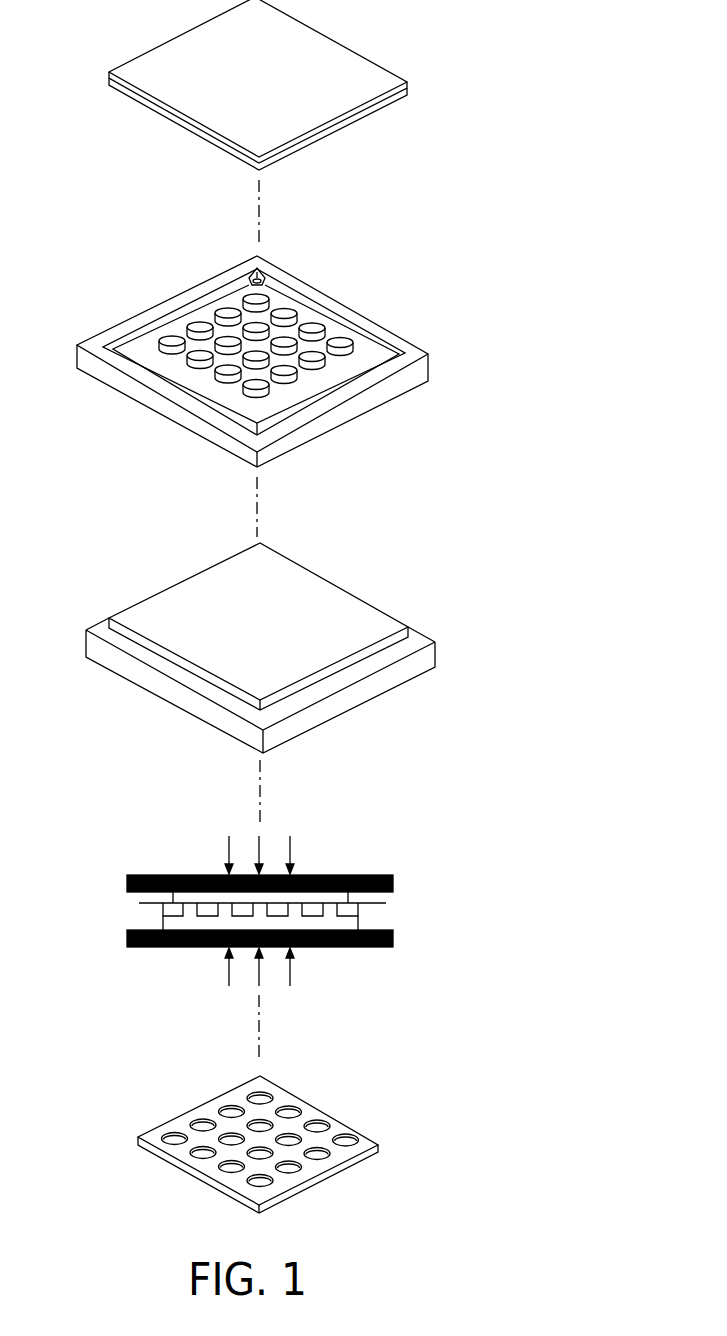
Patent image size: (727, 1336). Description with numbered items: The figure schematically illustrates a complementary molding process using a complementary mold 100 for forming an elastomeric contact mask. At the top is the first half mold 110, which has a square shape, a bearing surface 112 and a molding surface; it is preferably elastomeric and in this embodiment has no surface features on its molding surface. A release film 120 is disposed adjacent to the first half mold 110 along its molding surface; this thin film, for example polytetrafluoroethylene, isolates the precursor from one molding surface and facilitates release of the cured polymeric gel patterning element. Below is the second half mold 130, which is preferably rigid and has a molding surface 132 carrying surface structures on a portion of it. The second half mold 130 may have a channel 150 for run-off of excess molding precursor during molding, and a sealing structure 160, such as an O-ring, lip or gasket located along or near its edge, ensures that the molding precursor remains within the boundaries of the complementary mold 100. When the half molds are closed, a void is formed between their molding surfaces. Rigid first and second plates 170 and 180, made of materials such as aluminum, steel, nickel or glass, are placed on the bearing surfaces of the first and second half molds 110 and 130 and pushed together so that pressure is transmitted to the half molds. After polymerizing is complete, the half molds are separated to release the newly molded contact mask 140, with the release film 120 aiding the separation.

The complementary mold 100 is at (570, 652).
The first half mold 110 is at (358, 52).
The bearing surface 112 is at (213, 37).
The release film 120 is at (377, 117).
The second half mold 130 is at (385, 400).
The molding surface 132 is at (160, 362).
The molded contact mask 140 is at (355, 1127).
The channel 150 is at (322, 308).
The sealing structure 160 is at (426, 349).
The first plate 170 is at (393, 882).
The second plate 180 is at (393, 938).